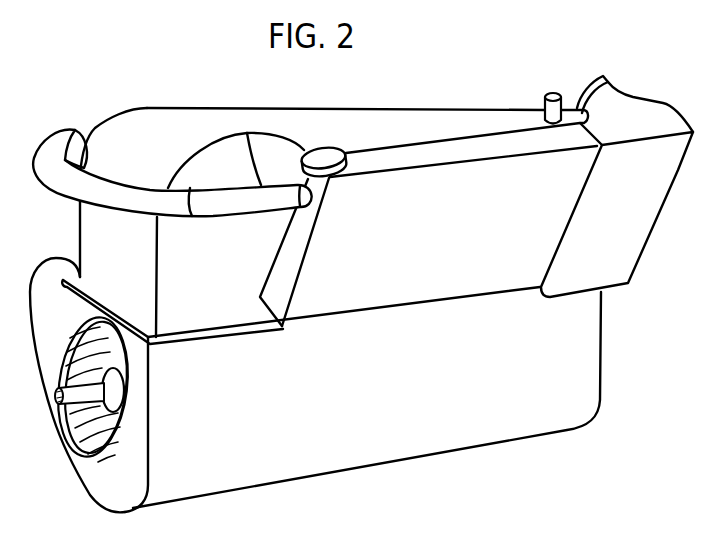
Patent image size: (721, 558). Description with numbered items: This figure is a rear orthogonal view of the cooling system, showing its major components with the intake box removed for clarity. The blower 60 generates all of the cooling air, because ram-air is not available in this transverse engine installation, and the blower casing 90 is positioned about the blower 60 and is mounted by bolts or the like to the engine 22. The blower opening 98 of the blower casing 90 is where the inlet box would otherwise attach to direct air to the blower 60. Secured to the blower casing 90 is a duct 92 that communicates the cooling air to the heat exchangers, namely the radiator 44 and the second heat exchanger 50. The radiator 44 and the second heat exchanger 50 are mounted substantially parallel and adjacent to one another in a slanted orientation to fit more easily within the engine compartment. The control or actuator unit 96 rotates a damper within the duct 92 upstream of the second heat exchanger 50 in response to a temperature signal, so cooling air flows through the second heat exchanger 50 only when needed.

The engine 22 is at (366, 451).
The radiator 44 is at (443, 244).
The second heat exchanger 50 is at (623, 229).
The blower 60 is at (83, 437).
The blower casing 90 is at (108, 490).
The duct 92 is at (90, 232).
The control or actuator unit 96 is at (547, 103).
The blower opening 98 is at (56, 375).